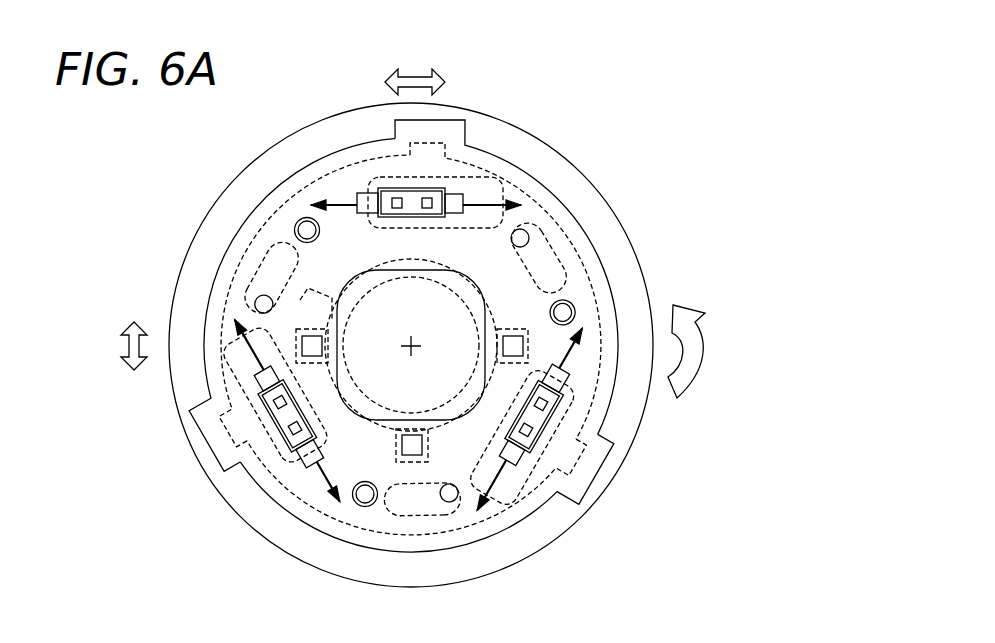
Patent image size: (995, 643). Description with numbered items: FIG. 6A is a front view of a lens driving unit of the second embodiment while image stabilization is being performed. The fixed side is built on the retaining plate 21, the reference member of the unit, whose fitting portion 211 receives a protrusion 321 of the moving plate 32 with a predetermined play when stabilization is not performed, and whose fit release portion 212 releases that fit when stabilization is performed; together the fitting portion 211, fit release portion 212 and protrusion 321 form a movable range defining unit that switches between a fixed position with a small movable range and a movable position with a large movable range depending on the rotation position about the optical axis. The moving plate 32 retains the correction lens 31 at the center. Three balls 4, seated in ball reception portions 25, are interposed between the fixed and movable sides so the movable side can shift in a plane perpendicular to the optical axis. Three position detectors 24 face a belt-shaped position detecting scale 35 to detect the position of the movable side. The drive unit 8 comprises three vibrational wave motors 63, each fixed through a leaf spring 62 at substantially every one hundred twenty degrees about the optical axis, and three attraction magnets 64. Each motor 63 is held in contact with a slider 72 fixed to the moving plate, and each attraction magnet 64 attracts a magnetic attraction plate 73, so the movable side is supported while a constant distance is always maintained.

The drive unit 8 is at (733, 62).
The retaining plate 21 is at (411, 370).
The fitting portion 211 is at (547, 505).
The fit release portion 212 is at (588, 485).
The protrusion 321 is at (580, 458).
The correction lens 31 is at (377, 382).
The moving plate 32 is at (340, 250).
The position detecting scale 35 is at (310, 335).
The position detector 24 is at (313, 308).
The leaf spring 62 is at (362, 193).
The vibrational wave motor 63 is at (408, 195).
The attraction magnet 64 is at (520, 238).
The slider 72 is at (478, 197).
The attraction plate 73 is at (553, 262).
The ball 4 is at (393, 562).
The ball reception portion 25 is at (365, 494).